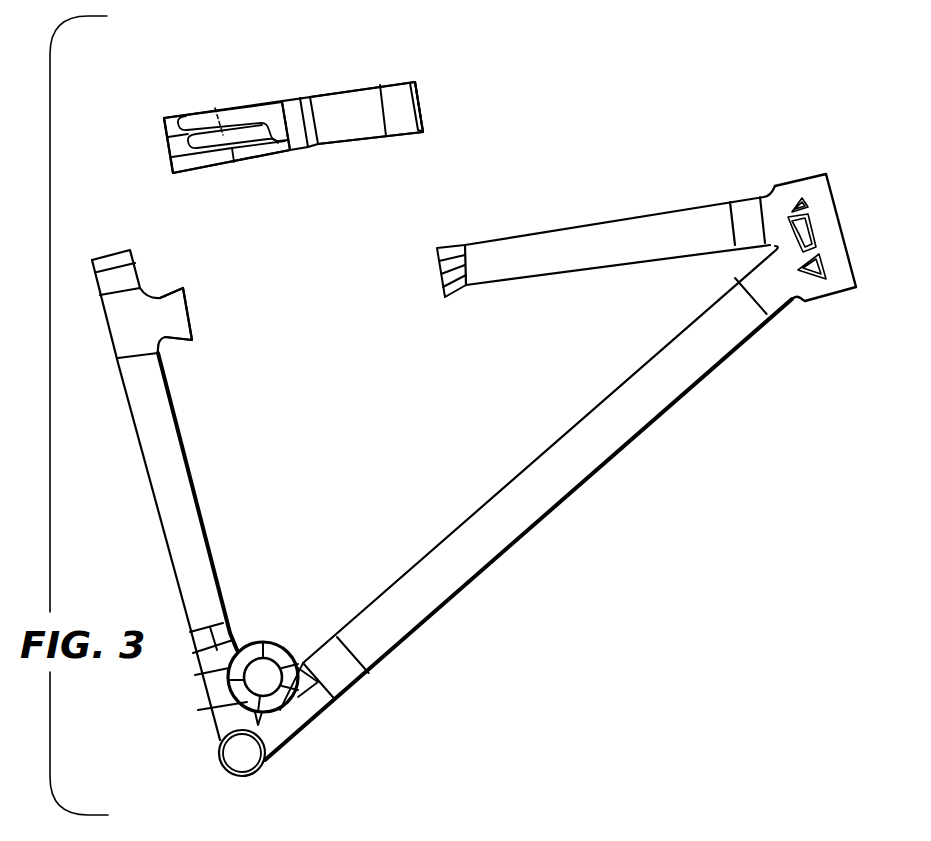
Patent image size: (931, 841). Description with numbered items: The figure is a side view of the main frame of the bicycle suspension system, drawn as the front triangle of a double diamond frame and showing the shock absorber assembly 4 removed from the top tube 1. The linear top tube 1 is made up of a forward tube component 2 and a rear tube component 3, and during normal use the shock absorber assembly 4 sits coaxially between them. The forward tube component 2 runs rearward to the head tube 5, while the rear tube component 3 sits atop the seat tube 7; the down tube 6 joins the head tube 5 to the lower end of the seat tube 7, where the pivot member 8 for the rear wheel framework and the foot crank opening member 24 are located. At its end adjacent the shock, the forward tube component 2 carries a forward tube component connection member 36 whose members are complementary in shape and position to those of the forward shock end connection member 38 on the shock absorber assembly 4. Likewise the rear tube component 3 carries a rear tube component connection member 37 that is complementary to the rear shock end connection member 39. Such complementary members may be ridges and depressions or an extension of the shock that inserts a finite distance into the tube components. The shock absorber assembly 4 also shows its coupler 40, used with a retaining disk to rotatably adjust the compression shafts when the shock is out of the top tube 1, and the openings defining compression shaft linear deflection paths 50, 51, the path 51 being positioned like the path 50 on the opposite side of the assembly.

The top tube 1 is at (522, 283).
The forward tube component 2 is at (660, 212).
The rear tube component 3 is at (180, 288).
The shock absorber assembly 4 is at (302, 97).
The head tube 5 is at (834, 191).
The down tube 6 is at (650, 427).
The seat tube 7 is at (176, 484).
The pivot member 8 is at (266, 680).
The foot crank opening member 24 is at (245, 758).
The forward tube component connection member 36 is at (437, 266).
The rear tube component connection member 37 is at (193, 318).
The forward shock end connection member 38 is at (425, 108).
The rear shock end connection member 39 is at (167, 148).
The coupler 40 is at (393, 96).
The compression shaft linear deflection path 50 is at (187, 117).
The compression shaft linear deflection path 51 is at (222, 108).